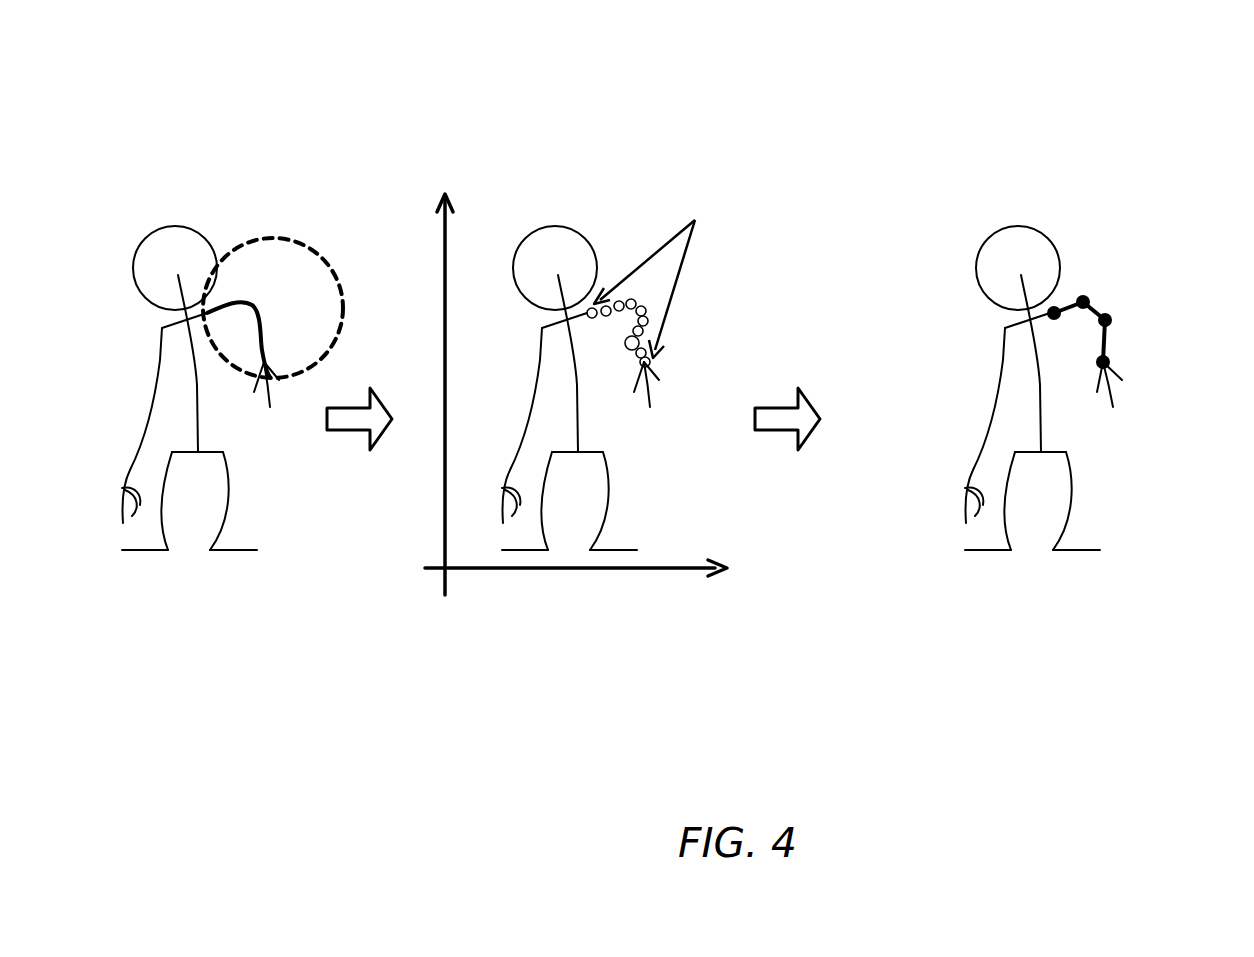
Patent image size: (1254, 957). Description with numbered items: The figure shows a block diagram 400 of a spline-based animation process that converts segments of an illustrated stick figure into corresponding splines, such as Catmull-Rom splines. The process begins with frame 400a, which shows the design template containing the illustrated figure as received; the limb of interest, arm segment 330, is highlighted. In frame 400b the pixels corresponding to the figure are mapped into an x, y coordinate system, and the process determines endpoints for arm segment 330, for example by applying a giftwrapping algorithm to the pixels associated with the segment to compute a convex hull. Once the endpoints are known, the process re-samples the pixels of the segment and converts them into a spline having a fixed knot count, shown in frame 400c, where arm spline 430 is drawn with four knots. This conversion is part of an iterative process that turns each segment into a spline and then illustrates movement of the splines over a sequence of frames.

The block diagram 400 is at (1142, 83).
The frame 400a is at (232, 663).
The frame 400b is at (645, 663).
The frame 400c is at (1095, 663).
The arm segment 330 is at (260, 302).
The arm spline 430 is at (1105, 305).